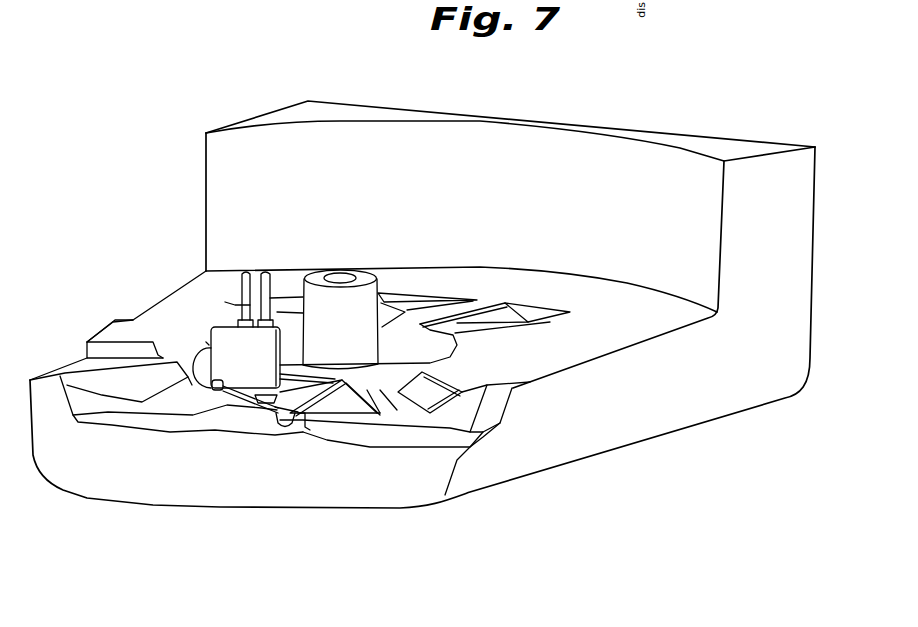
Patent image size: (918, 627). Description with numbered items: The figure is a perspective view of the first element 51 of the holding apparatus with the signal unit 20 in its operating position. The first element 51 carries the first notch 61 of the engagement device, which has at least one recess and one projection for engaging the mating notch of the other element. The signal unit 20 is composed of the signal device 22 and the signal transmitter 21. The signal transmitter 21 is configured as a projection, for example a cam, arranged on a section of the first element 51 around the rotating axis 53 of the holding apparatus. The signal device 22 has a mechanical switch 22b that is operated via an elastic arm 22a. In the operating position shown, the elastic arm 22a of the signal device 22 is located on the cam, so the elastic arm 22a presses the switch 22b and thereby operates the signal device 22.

The signal unit 20 is at (127, 270).
The signal transmitter 21 is at (287, 440).
The signal device 22 is at (242, 356).
The elastic arm 22a is at (233, 398).
The mechanical switch 22b is at (265, 403).
The first element 51 is at (597, 410).
The rotating axis 53 is at (328, 312).
The first notch 61 is at (410, 395).